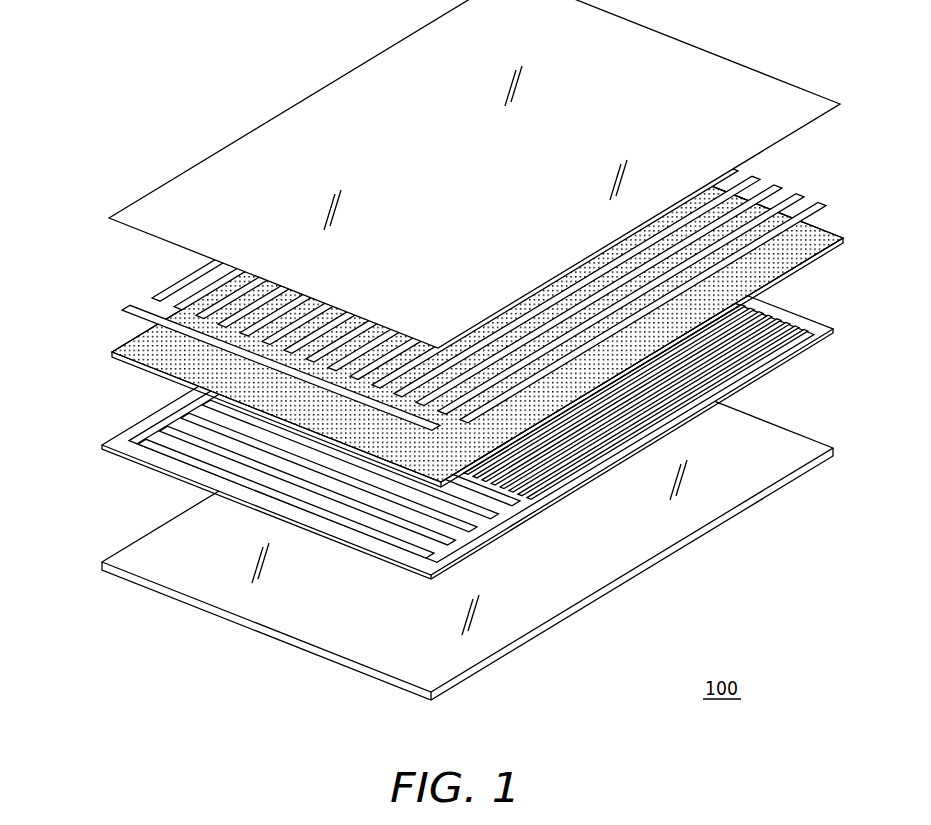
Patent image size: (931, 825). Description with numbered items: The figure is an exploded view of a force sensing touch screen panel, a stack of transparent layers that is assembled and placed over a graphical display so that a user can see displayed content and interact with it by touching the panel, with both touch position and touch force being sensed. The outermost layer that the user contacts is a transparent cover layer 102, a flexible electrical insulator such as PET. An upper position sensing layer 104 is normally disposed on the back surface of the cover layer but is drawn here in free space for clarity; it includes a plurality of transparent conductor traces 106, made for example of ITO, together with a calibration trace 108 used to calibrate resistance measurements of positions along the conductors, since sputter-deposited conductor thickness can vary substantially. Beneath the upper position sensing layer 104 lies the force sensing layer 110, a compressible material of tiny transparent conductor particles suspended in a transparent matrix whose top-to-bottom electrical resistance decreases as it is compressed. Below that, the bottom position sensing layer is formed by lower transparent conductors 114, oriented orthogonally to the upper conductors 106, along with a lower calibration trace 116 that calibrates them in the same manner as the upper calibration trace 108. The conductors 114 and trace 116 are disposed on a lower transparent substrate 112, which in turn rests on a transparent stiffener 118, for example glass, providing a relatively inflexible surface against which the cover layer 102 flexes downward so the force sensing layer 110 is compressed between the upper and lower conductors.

The transparent cover layer 102 is at (182, 202).
The upper position sensing layer 104 is at (437, 330).
The transparent conductor traces 106 is at (473, 252).
The calibration trace 108 is at (140, 317).
The force sensing layer 110 is at (115, 357).
The lower transparent substrate 112 is at (122, 457).
The lower transparent conductors 114 is at (153, 427).
The lower calibration trace 116 is at (470, 548).
The transparent stiffener 118 is at (120, 578).